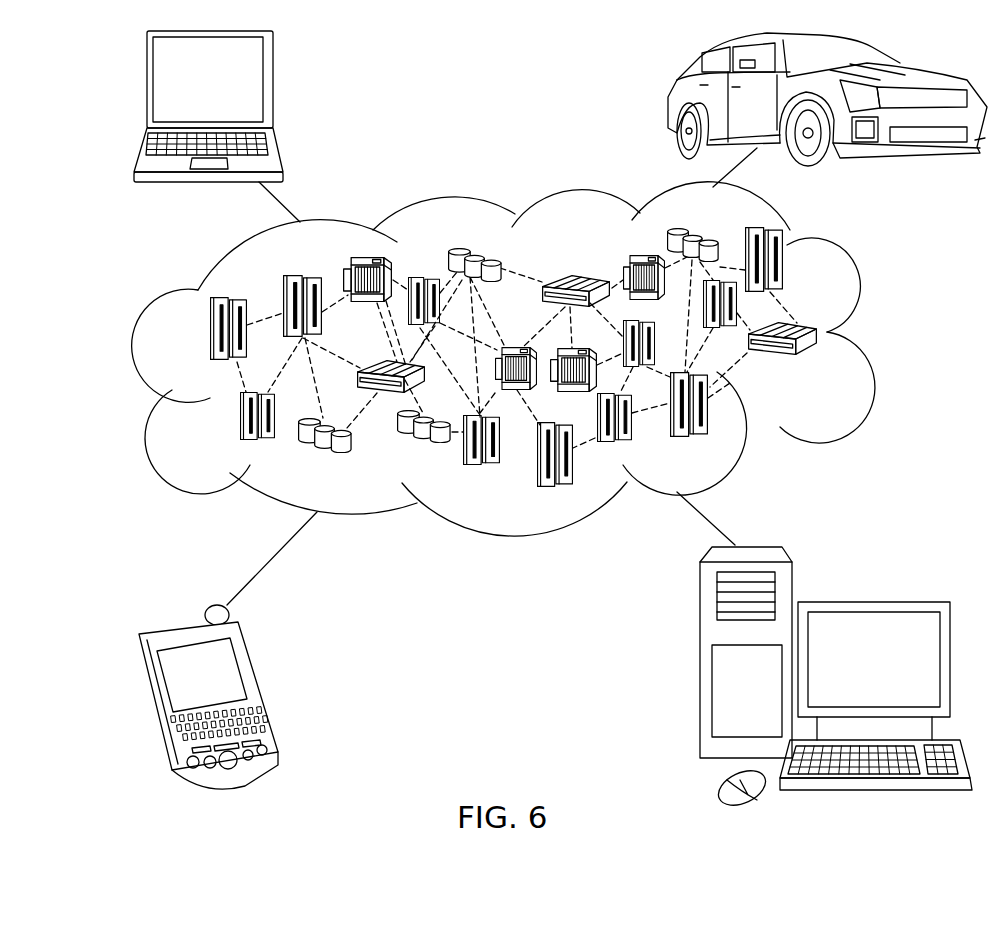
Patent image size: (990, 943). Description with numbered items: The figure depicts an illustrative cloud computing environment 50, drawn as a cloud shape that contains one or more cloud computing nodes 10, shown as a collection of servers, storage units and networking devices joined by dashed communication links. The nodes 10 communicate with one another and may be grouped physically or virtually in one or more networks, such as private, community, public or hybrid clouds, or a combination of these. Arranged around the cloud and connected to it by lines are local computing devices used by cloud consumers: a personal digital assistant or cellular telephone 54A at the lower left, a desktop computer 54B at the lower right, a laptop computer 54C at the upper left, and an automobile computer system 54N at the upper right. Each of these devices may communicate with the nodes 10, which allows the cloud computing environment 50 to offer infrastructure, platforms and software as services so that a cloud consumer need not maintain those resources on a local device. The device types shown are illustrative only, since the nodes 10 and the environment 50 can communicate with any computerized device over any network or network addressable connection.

The cloud computing node 10 is at (828, 366).
The cloud computing environment 50 is at (868, 343).
The personal digital assistant or cellular telephone 54A is at (258, 688).
The desktop computer 54B is at (878, 600).
The laptop computer 54C is at (273, 86).
The automobile computer system 54N is at (672, 100).